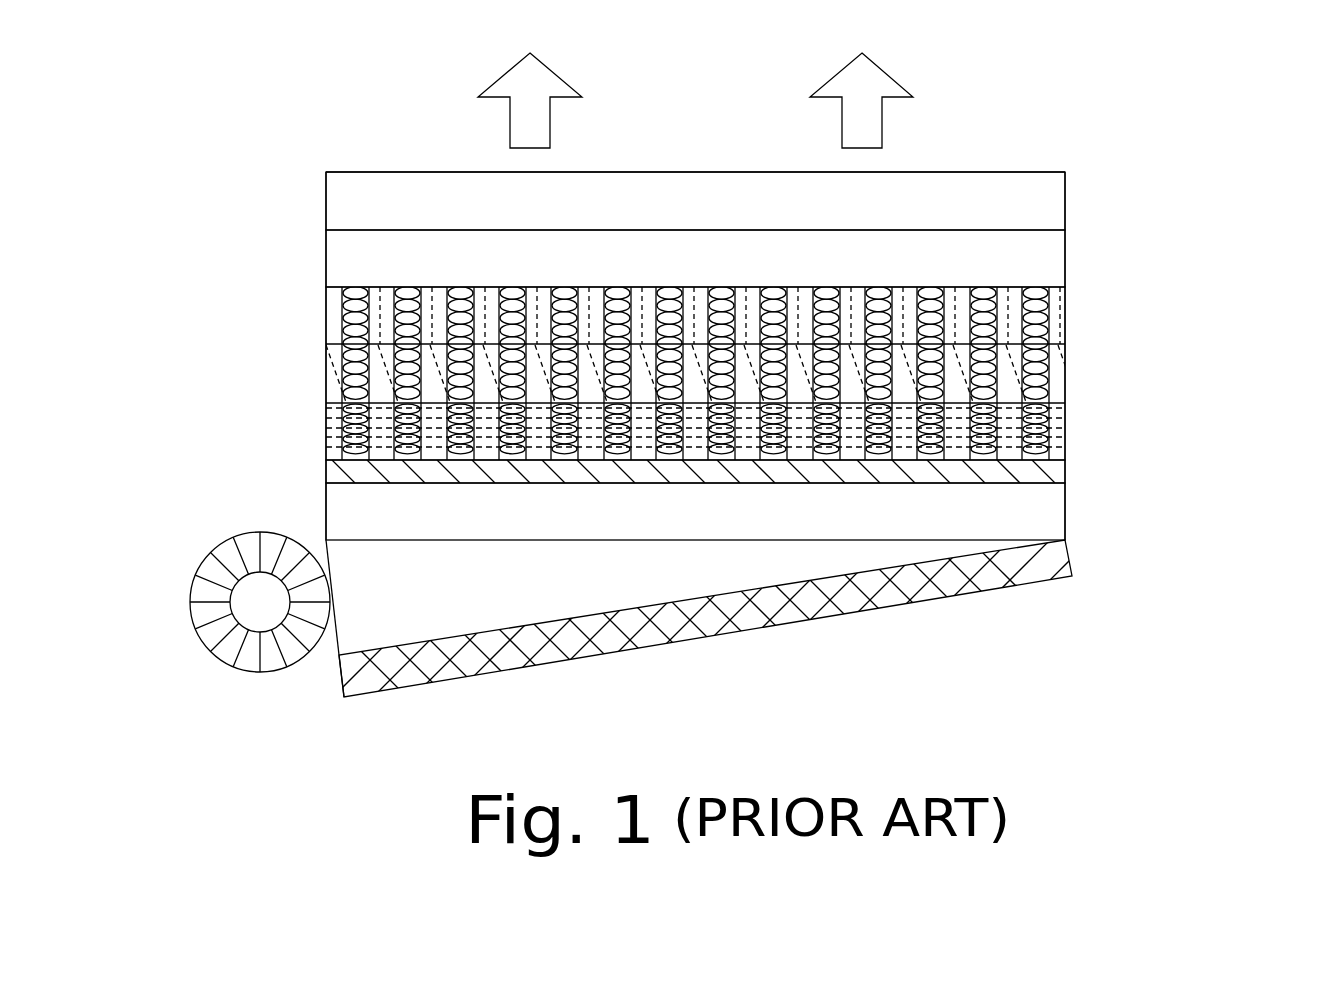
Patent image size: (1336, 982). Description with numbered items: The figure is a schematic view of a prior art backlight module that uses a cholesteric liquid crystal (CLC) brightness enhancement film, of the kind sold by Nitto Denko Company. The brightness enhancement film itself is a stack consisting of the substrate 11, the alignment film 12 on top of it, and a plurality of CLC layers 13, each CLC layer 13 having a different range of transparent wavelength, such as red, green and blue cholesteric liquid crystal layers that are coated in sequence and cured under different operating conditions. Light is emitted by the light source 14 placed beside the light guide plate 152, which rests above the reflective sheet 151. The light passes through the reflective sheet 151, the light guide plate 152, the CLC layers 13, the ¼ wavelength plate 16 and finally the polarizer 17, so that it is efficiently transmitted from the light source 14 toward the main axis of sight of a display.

The polarizer 17 is at (1018, 198).
The ¼ wavelength plate 16 is at (1042, 268).
The CLC layers 13 is at (1077, 288).
The alignment film 12 is at (1045, 476).
The substrate 11 is at (1045, 515).
The reflective sheet 151 is at (1062, 558).
The light guide plate 152 is at (377, 557).
The light source 14 is at (207, 588).